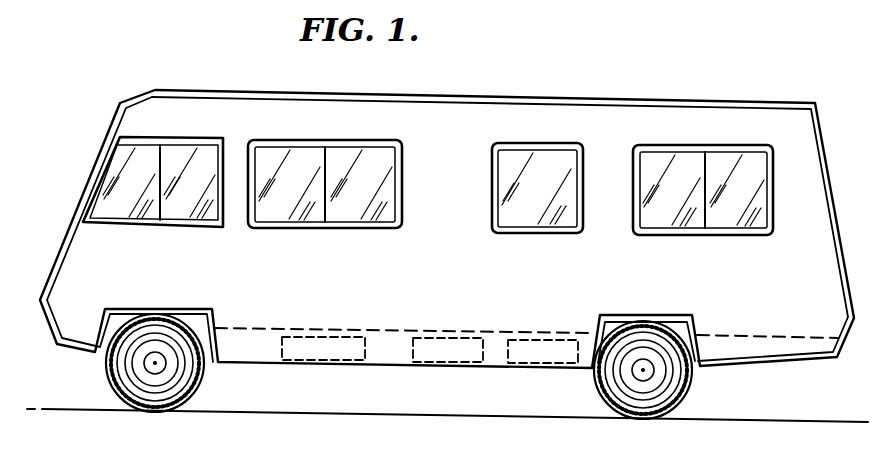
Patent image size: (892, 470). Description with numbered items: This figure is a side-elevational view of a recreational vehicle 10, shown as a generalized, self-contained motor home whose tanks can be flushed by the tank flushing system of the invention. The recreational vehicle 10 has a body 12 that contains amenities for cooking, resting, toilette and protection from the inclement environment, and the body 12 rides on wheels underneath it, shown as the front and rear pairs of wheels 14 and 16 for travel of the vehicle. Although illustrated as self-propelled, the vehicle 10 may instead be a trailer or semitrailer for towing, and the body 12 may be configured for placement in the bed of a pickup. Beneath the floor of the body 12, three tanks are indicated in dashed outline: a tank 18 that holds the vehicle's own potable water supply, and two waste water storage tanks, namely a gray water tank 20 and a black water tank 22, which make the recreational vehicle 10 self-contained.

The recreational vehicle 10 is at (606, 78).
The body 12 is at (453, 120).
The front wheels 14 is at (122, 377).
The rear wheels 16 is at (693, 388).
The potable water tank 18 is at (318, 335).
The gray water tank 20 is at (433, 335).
The black water tank 22 is at (530, 340).